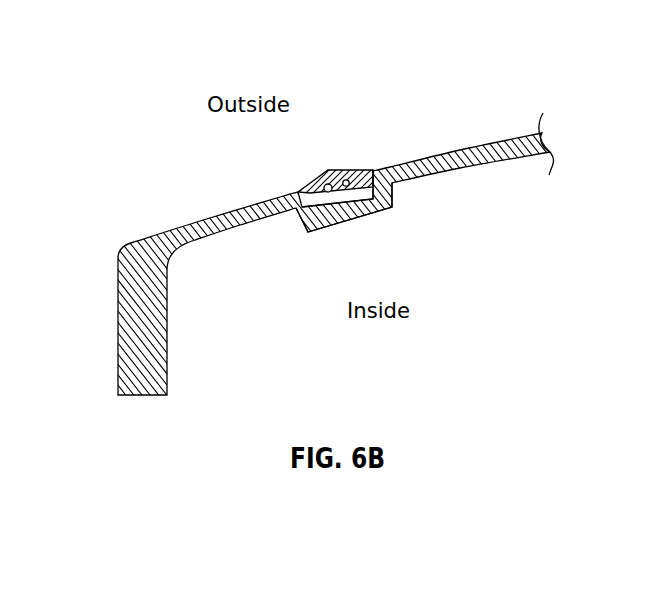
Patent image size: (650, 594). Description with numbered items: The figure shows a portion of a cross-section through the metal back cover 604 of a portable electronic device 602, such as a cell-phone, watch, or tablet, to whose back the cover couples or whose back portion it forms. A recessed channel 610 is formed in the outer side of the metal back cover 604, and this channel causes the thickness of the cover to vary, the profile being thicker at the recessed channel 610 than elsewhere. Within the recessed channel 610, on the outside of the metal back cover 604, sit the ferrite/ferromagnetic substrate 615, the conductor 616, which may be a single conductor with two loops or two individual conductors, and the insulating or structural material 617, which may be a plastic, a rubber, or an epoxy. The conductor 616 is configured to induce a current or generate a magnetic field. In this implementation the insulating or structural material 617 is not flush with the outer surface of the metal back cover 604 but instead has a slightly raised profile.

The portable electronic device 602 is at (325, 297).
The metal back cover 604 is at (548, 136).
The recessed channel 610 is at (351, 221).
The ferrite/ferromagnetic substrate 615 is at (294, 194).
The conductor 616 is at (346, 180).
The insulating or structural material 617 is at (314, 190).